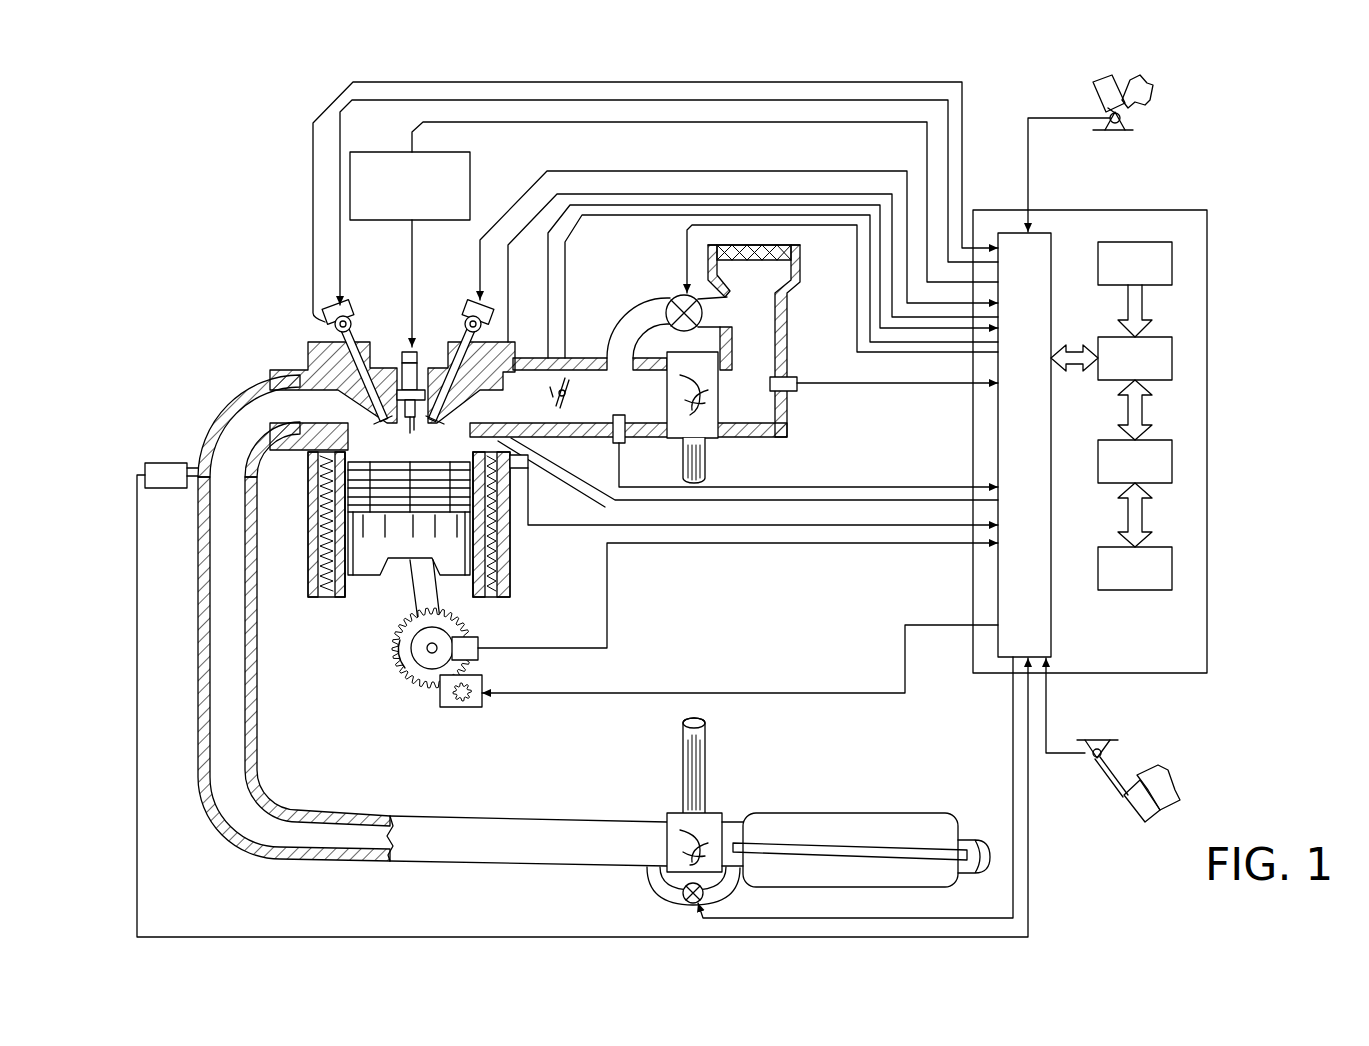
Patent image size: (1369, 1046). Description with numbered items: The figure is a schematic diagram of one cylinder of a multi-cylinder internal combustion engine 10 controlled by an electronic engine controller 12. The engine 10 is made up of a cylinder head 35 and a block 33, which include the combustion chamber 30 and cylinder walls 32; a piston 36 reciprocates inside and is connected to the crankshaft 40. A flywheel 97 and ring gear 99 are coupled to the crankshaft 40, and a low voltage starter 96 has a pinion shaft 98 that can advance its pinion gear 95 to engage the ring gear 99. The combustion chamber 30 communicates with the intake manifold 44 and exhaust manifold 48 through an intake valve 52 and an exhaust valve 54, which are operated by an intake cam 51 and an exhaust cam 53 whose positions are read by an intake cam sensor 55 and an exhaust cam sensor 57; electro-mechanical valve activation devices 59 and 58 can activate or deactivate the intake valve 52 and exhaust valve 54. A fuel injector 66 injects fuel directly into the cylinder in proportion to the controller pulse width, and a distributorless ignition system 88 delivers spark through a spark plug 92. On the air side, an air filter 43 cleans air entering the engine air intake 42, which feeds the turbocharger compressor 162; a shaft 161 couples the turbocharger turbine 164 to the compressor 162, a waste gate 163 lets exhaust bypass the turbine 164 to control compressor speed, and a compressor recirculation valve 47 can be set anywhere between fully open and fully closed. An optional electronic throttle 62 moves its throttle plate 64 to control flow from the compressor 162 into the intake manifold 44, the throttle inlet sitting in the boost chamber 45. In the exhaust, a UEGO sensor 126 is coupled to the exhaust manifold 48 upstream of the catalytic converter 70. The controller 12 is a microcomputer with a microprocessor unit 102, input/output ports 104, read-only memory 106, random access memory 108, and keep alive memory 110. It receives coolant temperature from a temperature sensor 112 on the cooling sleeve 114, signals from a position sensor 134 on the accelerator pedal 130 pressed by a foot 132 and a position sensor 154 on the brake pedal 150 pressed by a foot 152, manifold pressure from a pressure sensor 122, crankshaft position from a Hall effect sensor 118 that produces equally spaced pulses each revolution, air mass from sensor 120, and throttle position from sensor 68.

The internal combustion engine 10 is at (243, 292).
The electronic engine controller 12 is at (1137, 424).
The combustion chamber 30 is at (409, 443).
The cylinder walls 32 is at (352, 583).
The block 33 is at (305, 486).
The cylinder head 35 is at (305, 340).
The piston 36 is at (392, 577).
The crankshaft 40 is at (410, 680).
The engine air intake 42 is at (625, 266).
The air filter 43 is at (762, 262).
The intake manifold 44 is at (545, 409).
The boost chamber 45 is at (643, 409).
The compressor recirculation valve 47 is at (672, 298).
The exhaust manifold 48 is at (288, 415).
The intake cam 51 is at (466, 302).
The intake valve 52 is at (452, 408).
The exhaust cam 53 is at (338, 304).
The exhaust valve 54 is at (360, 378).
The intake cam sensor 55 is at (490, 324).
The exhaust cam sensor 57 is at (326, 316).
The valve activation device 58 is at (355, 325).
The valve activation device 59 is at (470, 338).
The electronic throttle 62 is at (568, 396).
The throttle plate 64 is at (568, 406).
The fuel injector 66 is at (522, 462).
The throttle position sensor 68 is at (548, 378).
The catalytic converter 70 is at (785, 813).
The distributorless ignition system 88 is at (368, 152).
The spark plug 92 is at (416, 345).
The pinion gear 95 is at (470, 705).
The starter 96 is at (719, 690).
The flywheel 97 is at (397, 660).
The pinion shaft 98 is at (457, 700).
The ring gear 99 is at (423, 690).
The microprocessor unit 102 is at (1172, 360).
The input/output ports 104 is at (1055, 245).
The read-only memory 106 is at (1172, 265).
The random access memory 108 is at (1172, 462).
The keep alive memory 110 is at (1172, 570).
The temperature sensor 112 is at (754, 491).
The cooling sleeve 114 is at (508, 560).
The Hall effect sensor 118 is at (478, 640).
The air mass sensor 120 is at (797, 378).
The pressure sensor 122 is at (612, 442).
The Universal Exhaust Gas Oxygen (UEGO) sensor 126 is at (145, 468).
The accelerator pedal 130 is at (1095, 93).
The foot 132 is at (1147, 80).
The position sensor 134 is at (1133, 118).
The brake pedal 150 is at (1125, 795).
The foot 152 is at (1148, 758).
The position sensor 154 is at (1080, 748).
The shaft 161 is at (683, 460).
The turbocharger compressor 162 is at (705, 425).
The waste gate 163 is at (686, 900).
The turbocharger turbine 164 is at (672, 812).